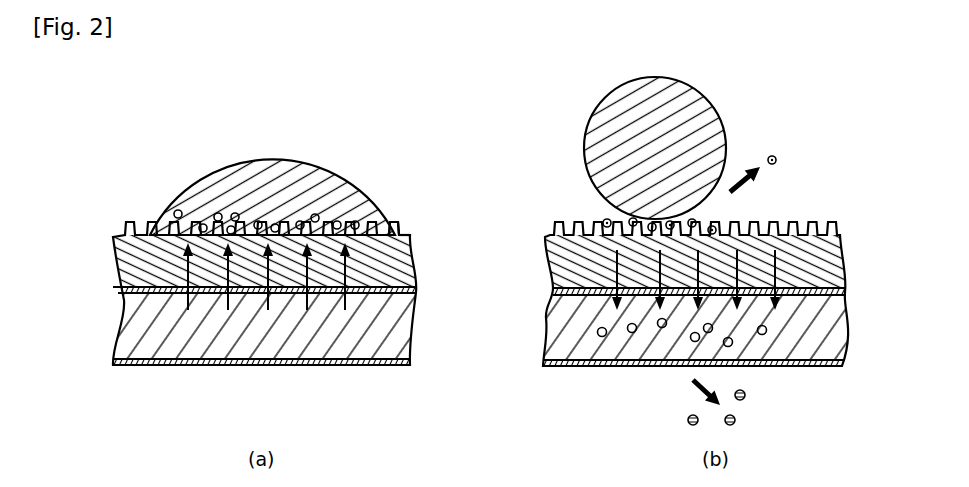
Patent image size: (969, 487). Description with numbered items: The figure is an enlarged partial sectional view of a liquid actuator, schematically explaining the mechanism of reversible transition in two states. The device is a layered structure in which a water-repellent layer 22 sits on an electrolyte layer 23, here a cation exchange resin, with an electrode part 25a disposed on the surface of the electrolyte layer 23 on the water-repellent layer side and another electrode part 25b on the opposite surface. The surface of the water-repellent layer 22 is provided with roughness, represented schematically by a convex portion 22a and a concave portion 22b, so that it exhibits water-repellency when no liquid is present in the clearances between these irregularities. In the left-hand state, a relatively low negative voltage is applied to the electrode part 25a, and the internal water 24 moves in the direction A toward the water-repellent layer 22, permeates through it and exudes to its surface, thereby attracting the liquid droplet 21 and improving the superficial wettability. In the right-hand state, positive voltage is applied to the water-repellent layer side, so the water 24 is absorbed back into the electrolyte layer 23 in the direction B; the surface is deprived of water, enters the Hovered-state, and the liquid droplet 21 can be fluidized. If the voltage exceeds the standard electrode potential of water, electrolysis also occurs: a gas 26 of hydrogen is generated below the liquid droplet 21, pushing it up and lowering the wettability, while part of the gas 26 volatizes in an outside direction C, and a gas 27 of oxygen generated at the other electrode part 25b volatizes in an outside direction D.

The liquid droplet 21 is at (345, 192).
The water-repellent layer 22 is at (398, 258).
The convex portion 22a is at (407, 233).
The concave portion 22b is at (395, 222).
The electrolyte layer 23 is at (407, 327).
The water 24 is at (178, 210).
The electrode part 25a is at (412, 292).
The electrode part 25b is at (395, 365).
The gas 26 is at (605, 219).
The gas 27 is at (746, 396).
The direction A is at (180, 271).
The direction B is at (617, 262).
The outside direction C is at (747, 187).
The outside direction D is at (697, 390).